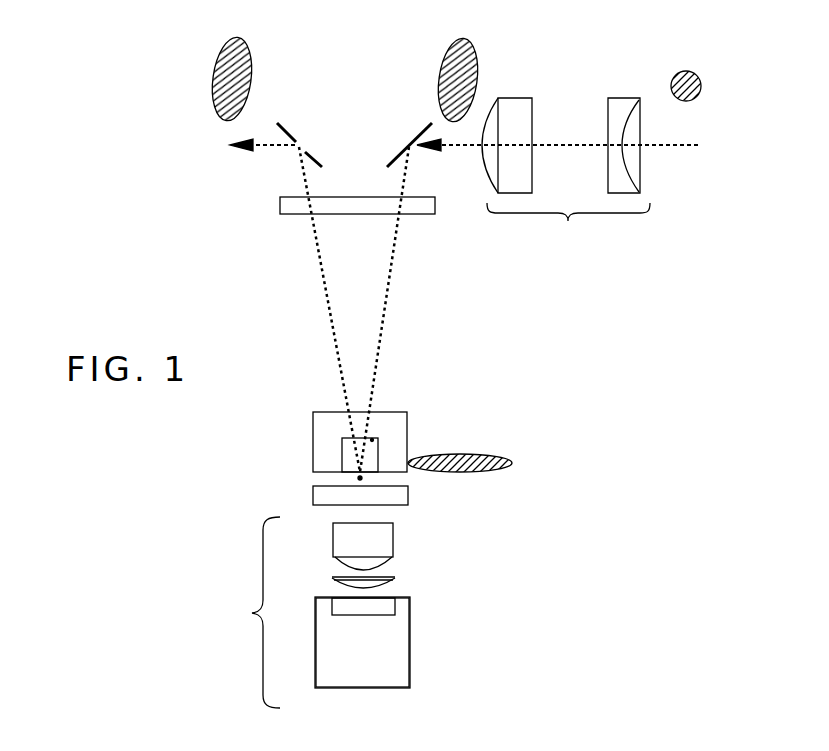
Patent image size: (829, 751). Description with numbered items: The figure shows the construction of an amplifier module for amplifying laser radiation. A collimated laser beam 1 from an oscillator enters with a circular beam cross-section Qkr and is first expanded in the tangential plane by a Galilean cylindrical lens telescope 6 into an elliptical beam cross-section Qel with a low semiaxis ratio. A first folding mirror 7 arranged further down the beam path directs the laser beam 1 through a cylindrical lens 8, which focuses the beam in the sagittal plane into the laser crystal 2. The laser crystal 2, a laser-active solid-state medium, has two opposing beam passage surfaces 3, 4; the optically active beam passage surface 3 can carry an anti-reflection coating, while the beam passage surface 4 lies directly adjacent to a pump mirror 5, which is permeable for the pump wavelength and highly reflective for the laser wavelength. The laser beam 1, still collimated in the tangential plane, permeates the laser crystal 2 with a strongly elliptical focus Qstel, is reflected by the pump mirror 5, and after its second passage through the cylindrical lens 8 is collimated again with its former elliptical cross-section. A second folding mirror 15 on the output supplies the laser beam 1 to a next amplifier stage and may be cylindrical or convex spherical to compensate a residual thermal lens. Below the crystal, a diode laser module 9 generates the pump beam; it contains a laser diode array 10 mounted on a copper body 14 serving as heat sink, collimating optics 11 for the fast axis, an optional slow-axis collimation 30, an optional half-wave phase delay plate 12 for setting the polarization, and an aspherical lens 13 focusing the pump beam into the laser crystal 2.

The laser beam 1 is at (690, 145).
The laser crystal 2 is at (373, 455).
The beam passage surface 3 is at (372, 438).
The beam passage surface 4 is at (338, 475).
The pump mirror 5 is at (408, 492).
The Galilean cylindrical lens telescope 6 is at (566, 173).
The first folding mirror 7 is at (425, 125).
The cylindrical lens 8 is at (430, 212).
The diode laser module 9 is at (379, 614).
The laser diode array 10 is at (395, 603).
The collimating optics 11 is at (397, 600).
The half-wave phase delay plate 12 is at (395, 577).
The aspherical lens 13 is at (373, 550).
The copper body 14 is at (402, 668).
The second folding mirror 15 is at (282, 132).
The collimation of the slow axis 30 is at (397, 586).
The elliptical beam cross-section Qel is at (253, 77).
The circular beam cross-section Qkr is at (705, 80).
The strongly elliptical focus Qstel is at (510, 462).